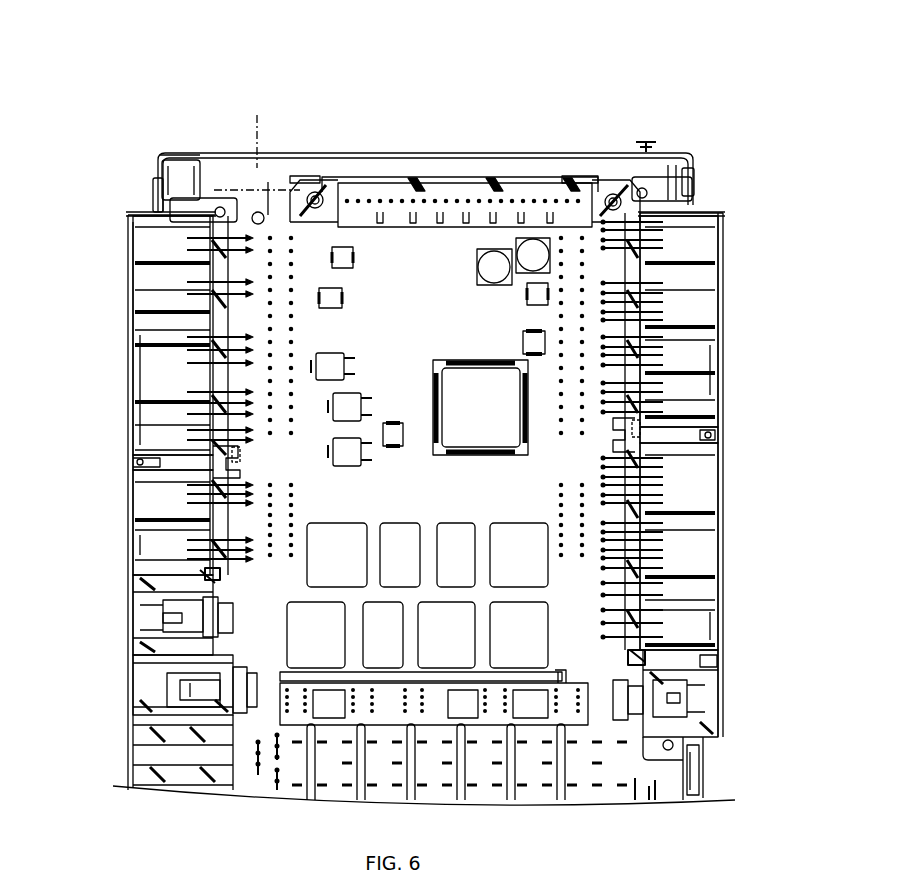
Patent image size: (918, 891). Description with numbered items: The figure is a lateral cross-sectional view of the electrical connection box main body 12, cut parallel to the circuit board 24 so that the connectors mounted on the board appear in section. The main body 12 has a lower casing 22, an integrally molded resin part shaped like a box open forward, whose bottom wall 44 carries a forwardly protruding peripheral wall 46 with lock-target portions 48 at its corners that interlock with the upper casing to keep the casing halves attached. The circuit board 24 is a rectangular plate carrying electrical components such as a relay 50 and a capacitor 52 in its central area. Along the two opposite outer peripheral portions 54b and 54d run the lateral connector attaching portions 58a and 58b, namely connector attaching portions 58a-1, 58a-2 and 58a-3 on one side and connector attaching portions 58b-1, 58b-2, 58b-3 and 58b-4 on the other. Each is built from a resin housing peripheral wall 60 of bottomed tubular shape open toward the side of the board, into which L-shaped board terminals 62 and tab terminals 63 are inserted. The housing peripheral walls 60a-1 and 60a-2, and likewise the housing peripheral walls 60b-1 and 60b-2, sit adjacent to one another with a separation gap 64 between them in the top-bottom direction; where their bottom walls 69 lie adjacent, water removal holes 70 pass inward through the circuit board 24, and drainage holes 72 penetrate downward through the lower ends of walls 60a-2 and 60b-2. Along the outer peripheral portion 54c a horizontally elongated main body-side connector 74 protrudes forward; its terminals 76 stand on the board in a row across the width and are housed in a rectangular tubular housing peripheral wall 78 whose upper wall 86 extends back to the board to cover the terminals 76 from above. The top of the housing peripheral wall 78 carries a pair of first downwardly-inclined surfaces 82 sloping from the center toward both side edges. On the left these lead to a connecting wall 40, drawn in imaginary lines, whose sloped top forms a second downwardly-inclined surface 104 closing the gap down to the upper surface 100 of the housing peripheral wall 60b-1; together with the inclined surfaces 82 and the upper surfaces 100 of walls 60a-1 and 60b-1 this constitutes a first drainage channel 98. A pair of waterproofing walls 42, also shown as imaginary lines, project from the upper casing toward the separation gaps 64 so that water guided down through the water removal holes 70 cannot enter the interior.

The electrical connection box main body 12 is at (412, 408).
The lower casing 22 is at (412, 427).
The circuit board 24 is at (272, 178).
The connecting wall 40 is at (426, 146).
The waterproofing walls 42 is at (620, 437).
The bottom wall 44 is at (188, 163).
The peripheral wall 46 is at (172, 155).
The lock-target portions 48 is at (697, 182).
The relay 50 is at (333, 545).
The capacitor 52 is at (492, 278).
The outer peripheral portion 54b is at (622, 263).
The outer peripheral portion 54c is at (505, 170).
The outer peripheral portion 54d is at (227, 312).
The connector attaching portions 58a is at (714, 478).
The connector attaching portion 58a-1 is at (722, 321).
The connector attaching portion 58a-2 is at (722, 546).
The connector attaching portion 58a-3 is at (721, 697).
The connector attaching portions 58b is at (400, 491).
The connector attaching portion 58b-1 is at (124, 335).
The connector attaching portion 58b-2 is at (118, 522).
The connector attaching portion 58b-3 is at (121, 608).
The connector attaching portion 58b-4 is at (126, 699).
The housing peripheral wall 60 is at (703, 717).
The housing peripheral wall 60a-1 is at (690, 397).
The housing peripheral wall 60a-2 is at (693, 613).
The housing peripheral wall 60b-1 is at (155, 378).
The housing peripheral wall 60b-2 is at (158, 545).
The board terminals 62 is at (575, 330).
The tab terminals 63 is at (703, 697).
The separation gaps 64 is at (620, 445).
The bottom walls 69 is at (625, 515).
The water removal holes 70 is at (622, 418).
The drainage holes 72 is at (645, 660).
The main body-side connector 74 is at (465, 190).
The terminals 76 is at (403, 210).
The housing peripheral wall 78 is at (465, 202).
The first downwardly-inclined surfaces 82 is at (557, 182).
The upper wall 86 is at (465, 201).
The first drainage channel 98 is at (404, 166).
The upper surface 100 is at (713, 212).
The second downwardly-inclined surface 104 is at (228, 182).